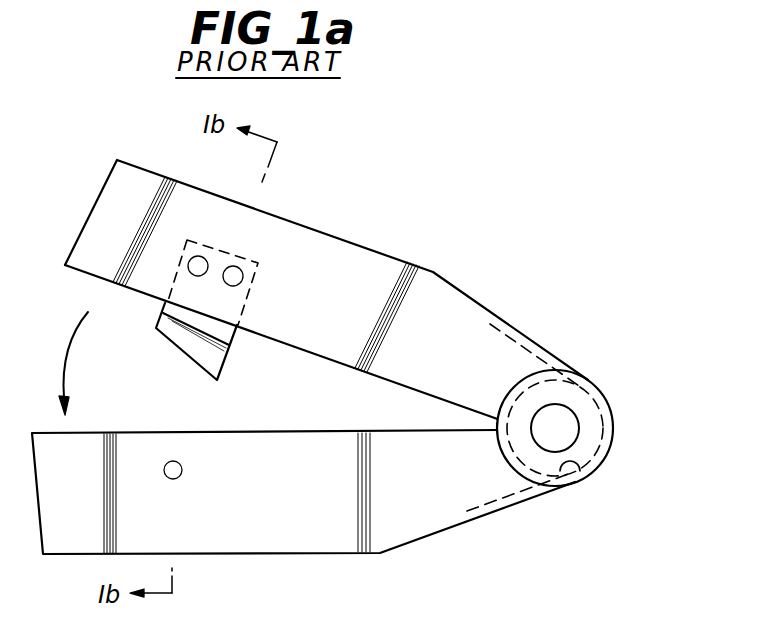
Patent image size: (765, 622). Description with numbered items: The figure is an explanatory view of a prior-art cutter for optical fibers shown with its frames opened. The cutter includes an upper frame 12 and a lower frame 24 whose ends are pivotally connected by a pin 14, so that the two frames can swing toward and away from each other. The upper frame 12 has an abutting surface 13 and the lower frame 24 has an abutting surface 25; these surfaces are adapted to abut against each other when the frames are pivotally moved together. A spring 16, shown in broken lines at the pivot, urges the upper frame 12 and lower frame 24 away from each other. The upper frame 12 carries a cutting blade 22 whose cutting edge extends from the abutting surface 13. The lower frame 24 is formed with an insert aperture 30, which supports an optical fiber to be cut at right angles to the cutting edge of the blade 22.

The upper frame 12 is at (318, 242).
The abutting surface 13 is at (352, 366).
The pin 14 is at (561, 437).
The spring 16 is at (586, 474).
The cutting blade 22 is at (218, 357).
The lower frame 24 is at (280, 535).
The abutting surface 25 is at (315, 432).
The insert aperture 30 is at (173, 470).